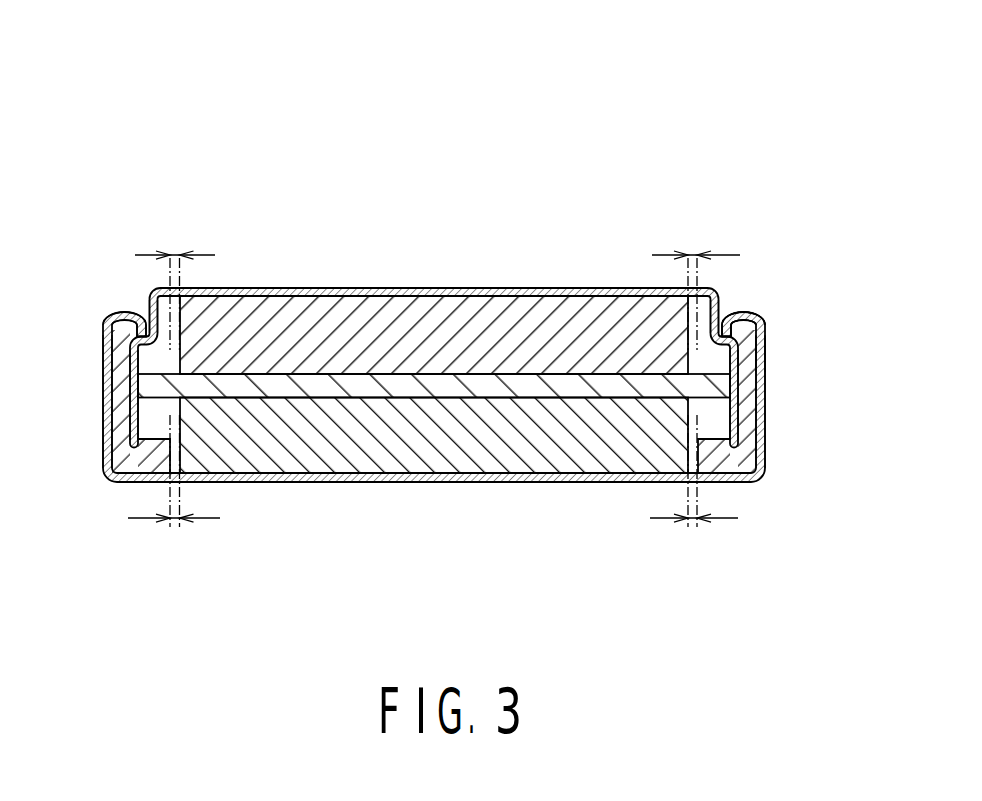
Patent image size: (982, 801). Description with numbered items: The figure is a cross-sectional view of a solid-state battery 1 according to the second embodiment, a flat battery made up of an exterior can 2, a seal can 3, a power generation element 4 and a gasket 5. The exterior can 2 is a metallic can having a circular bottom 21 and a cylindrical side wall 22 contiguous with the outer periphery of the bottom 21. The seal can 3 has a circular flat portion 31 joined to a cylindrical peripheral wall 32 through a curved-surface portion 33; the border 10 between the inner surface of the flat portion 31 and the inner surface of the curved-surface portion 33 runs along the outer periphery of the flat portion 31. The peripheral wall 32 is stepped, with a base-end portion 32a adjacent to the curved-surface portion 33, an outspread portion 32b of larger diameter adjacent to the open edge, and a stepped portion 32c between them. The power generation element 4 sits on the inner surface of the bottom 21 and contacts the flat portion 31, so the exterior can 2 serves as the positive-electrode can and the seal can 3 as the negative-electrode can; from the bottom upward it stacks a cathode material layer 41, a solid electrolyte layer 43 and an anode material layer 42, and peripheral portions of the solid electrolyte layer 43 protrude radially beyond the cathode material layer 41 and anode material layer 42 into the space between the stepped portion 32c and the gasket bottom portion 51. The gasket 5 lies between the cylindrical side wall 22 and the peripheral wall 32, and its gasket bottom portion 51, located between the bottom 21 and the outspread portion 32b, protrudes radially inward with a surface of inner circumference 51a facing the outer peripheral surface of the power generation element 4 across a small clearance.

The solid-state battery 1 is at (125, 183).
The exterior can 2 is at (461, 469).
The bottom 21 is at (505, 482).
The cylindrical side wall 22 is at (104, 416).
The seal can 3 is at (462, 286).
The flat portion 31 is at (390, 288).
The peripheral wall 32 is at (104, 374).
The base-end portion 32a is at (725, 313).
The stepped portion 32c is at (740, 348).
The outspread portion 32b is at (740, 387).
The curved-surface portion 33 is at (712, 297).
The border 10 is at (607, 290).
The power generation element 4 is at (434, 466).
The cathode material layer 41 is at (423, 430).
The anode material layer 42 is at (342, 340).
The solid electrolyte layer 43 is at (393, 385).
The gasket 5 is at (118, 343).
The gasket bottom portion 51 is at (507, 481).
The surface of inner circumference 51a is at (707, 481).